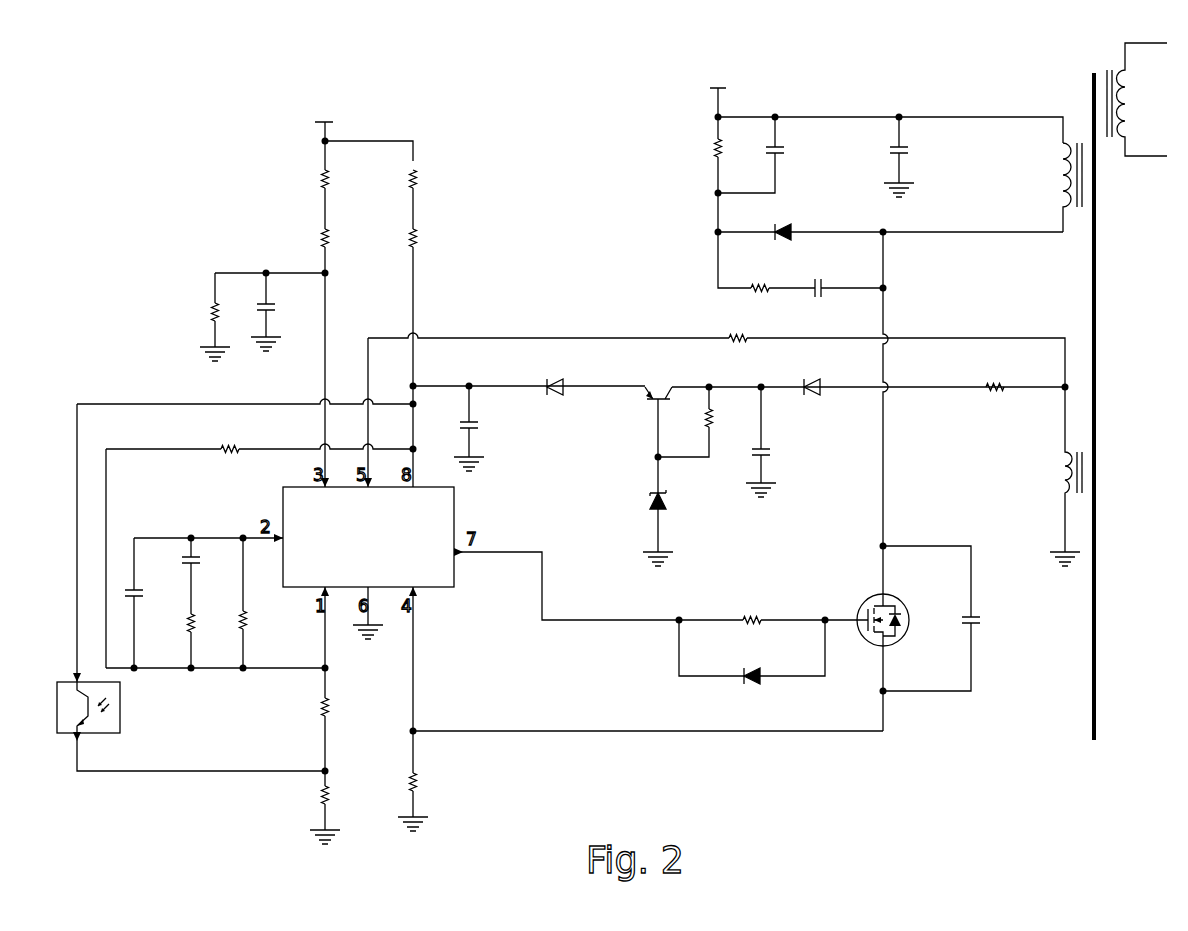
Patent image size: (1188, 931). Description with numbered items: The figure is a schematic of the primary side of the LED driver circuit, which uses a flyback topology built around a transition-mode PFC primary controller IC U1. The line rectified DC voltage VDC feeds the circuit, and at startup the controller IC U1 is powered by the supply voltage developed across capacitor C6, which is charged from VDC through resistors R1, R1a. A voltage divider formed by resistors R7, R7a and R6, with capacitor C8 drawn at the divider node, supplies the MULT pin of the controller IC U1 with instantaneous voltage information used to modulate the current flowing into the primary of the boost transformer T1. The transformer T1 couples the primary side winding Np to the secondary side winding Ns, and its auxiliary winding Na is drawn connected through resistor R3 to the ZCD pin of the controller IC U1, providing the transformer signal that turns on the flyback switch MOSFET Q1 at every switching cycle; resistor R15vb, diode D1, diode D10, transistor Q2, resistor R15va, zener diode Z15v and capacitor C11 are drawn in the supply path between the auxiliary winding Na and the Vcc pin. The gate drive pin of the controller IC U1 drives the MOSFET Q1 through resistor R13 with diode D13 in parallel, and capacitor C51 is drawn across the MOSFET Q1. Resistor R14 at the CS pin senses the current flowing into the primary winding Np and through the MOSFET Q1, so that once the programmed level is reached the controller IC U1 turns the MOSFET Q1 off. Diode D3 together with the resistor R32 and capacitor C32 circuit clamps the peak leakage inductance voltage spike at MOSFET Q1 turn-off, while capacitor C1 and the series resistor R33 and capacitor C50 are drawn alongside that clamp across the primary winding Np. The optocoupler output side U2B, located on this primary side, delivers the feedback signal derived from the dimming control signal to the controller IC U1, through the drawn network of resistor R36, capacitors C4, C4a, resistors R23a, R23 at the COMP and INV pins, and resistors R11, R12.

The line rectified DC voltage VDC is at (519, 102).
The voltage divider resistor R7 is at (336, 171).
The voltage divider resistor R7a is at (342, 230).
The startup charging resistor R1 is at (424, 171).
The startup charging resistor R1a is at (430, 230).
The voltage divider resistor R6 is at (221, 317).
The capacitor C8 is at (272, 312).
The resistor R36 is at (232, 463).
The auxiliary winding resistor R3 is at (738, 328).
The primary controller IC U1 is at (368, 548).
The capacitor C4 is at (143, 603).
The capacitor C4a is at (205, 576).
The resistor R23a is at (213, 633).
The resistor R23 is at (261, 603).
The resistor R11 is at (343, 698).
The resistor R12 is at (338, 807).
The current sense resistor R14 is at (424, 793).
The optocoupler output side U2B is at (191, 722).
The Vcc supply capacitor C6 is at (477, 428).
The diode D10 is at (564, 375).
The PNP transistor Q2 is at (658, 409).
The resistor R15va is at (712, 422).
The zener diode Z15v is at (690, 511).
The capacitor C11 is at (774, 442).
The diode D1 is at (809, 375).
The resistor R15vb is at (1004, 376).
The auxiliary winding Na is at (1059, 476).
The gate resistor R13 is at (736, 610).
The diode D13 is at (752, 652).
The MOSFET Q1 is at (883, 622).
The capacitor C51 is at (948, 618).
The clamp resistor R32 is at (735, 174).
The clamp capacitor C32 is at (766, 155).
The capacitor C1 is at (905, 157).
The clamp diode D3 is at (770, 222).
The resistor R33 is at (744, 277).
The capacitor C50 is at (800, 280).
The boost transformer T1 is at (1093, 391).
The primary side winding Np is at (1051, 187).
The secondary side winding Ns is at (1137, 99).